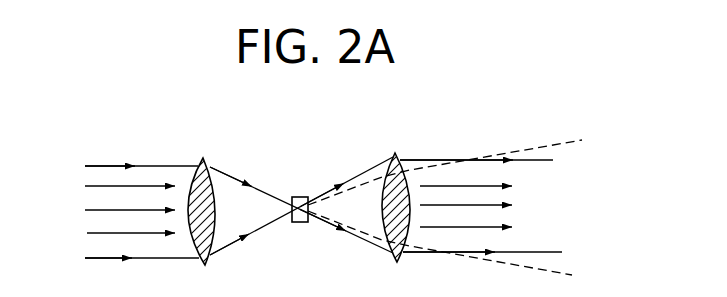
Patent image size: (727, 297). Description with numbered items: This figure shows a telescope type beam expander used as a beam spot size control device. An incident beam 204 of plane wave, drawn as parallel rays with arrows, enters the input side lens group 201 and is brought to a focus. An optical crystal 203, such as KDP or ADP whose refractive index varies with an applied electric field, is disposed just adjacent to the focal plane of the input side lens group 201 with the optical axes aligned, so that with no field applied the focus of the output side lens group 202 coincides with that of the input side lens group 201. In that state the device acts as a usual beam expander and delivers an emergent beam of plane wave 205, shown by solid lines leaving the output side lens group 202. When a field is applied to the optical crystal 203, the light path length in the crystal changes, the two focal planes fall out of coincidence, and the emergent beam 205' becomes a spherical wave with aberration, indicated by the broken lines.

The input side lens group 201 is at (203, 156).
The output side lens group 202 is at (393, 151).
The optical crystal 203 is at (300, 196).
The incident beam 204 is at (140, 199).
The emergent beam of plane wave 205 is at (481, 206).
The emergent beam 205' is at (445, 196).